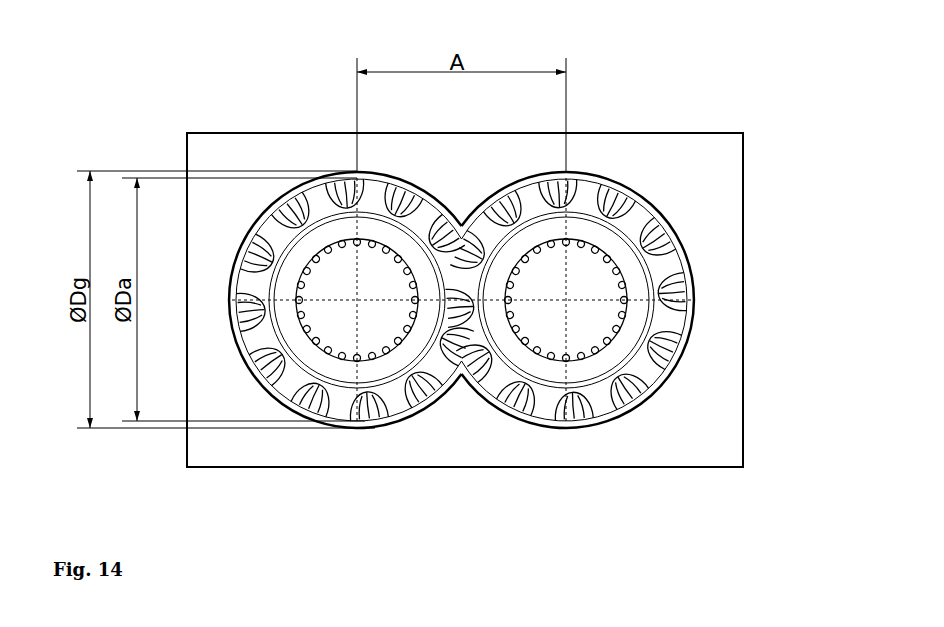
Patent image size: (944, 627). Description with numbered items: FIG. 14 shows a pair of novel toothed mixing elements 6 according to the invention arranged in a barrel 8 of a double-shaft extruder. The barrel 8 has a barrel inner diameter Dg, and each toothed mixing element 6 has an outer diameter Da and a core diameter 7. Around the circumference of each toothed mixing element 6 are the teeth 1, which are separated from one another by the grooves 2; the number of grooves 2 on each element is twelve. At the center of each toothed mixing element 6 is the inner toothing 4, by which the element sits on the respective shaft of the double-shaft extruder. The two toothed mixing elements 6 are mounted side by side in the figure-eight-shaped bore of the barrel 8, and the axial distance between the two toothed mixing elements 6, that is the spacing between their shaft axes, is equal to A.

The teeth 1 is at (389, 178).
The grooves 2 is at (423, 408).
The inner toothing 4 is at (625, 277).
The toothed mixing elements 6 is at (524, 362).
The core diameter 7 is at (650, 337).
The barrel 8 is at (690, 165).